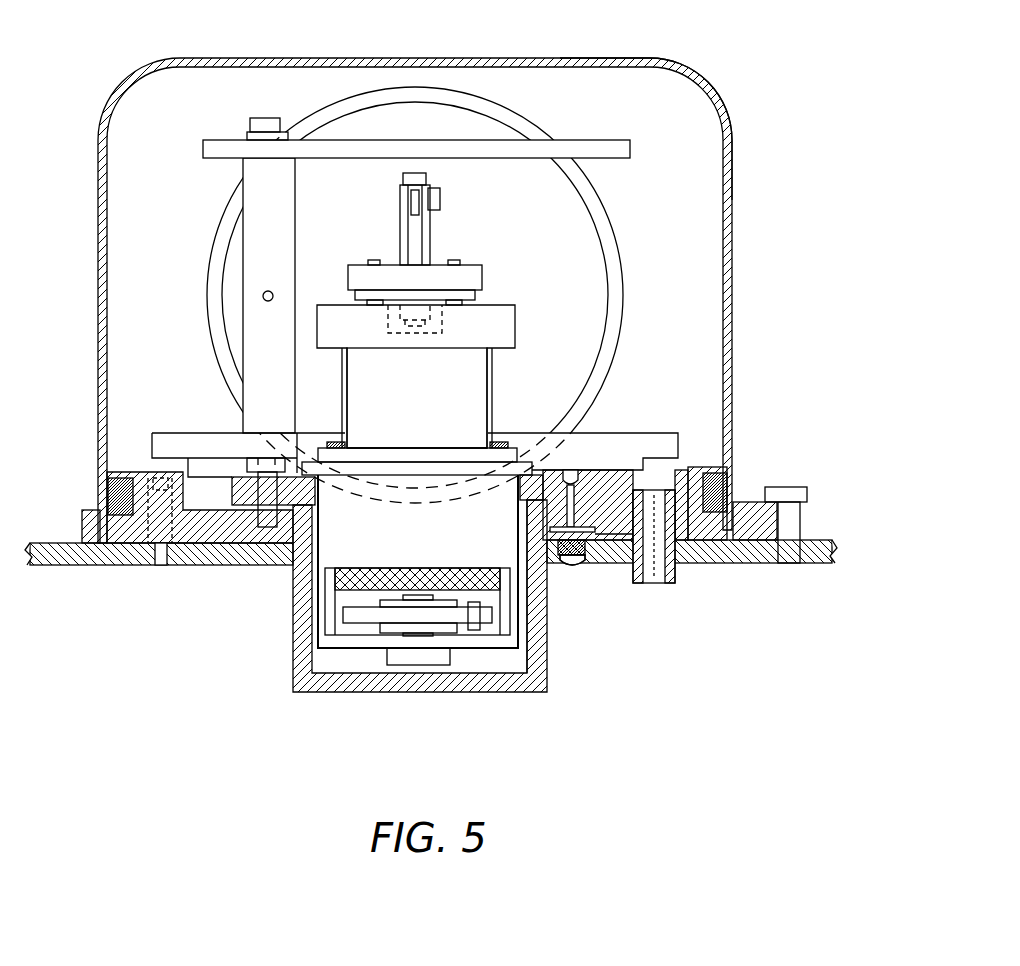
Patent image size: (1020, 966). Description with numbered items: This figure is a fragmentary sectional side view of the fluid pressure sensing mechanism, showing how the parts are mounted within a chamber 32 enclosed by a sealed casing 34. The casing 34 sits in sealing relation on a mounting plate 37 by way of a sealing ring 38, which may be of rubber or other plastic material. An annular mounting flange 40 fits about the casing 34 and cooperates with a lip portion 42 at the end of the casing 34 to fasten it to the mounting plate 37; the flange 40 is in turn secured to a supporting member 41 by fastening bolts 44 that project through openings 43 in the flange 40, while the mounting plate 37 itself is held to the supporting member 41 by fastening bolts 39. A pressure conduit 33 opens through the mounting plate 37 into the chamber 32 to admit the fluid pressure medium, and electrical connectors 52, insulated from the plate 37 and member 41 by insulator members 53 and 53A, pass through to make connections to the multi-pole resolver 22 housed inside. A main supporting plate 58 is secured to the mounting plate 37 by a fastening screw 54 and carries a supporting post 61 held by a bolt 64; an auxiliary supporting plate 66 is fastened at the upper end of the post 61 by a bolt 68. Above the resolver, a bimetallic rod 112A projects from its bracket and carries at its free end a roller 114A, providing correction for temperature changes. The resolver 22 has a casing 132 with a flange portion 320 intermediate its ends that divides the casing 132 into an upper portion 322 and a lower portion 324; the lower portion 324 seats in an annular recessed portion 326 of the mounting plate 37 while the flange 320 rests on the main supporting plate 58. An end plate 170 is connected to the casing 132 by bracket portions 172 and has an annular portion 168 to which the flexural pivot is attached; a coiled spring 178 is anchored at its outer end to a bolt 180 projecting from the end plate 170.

The multi-pole resolver 22 is at (440, 538).
The chamber 32 is at (702, 224).
The pressure conduit 33 is at (676, 580).
The sealed casing 34 is at (652, 58).
The mounting plate 37 is at (206, 545).
The sealing ring 38 is at (729, 482).
The fastening bolts 39 is at (161, 565).
The annular mounting flange 40 is at (93, 524).
The supporting member 41 is at (131, 565).
The lip portion 42 is at (96, 542).
The openings 43 is at (803, 560).
The fastening bolts 44 is at (791, 487).
The electrical connectors 52 is at (578, 495).
The insulator member 53 is at (579, 520).
The insulator member 53A is at (562, 557).
The fastening screw 54 is at (262, 505).
The main supporting plate 58 is at (298, 503).
The supporting post 61 is at (253, 233).
The bolt 64 is at (261, 458).
The auxiliary supporting plate 66 is at (601, 140).
The bolt 68 is at (258, 118).
The bimetallic rod 112A is at (421, 249).
The roller 114A is at (443, 327).
The casing 132 is at (438, 428).
The annular portion 168 is at (398, 661).
The end plate 170 is at (497, 640).
The bracket portions 172 is at (320, 604).
The spring 178 is at (356, 618).
The bolt 180 is at (475, 626).
The flange portion 320 is at (547, 470).
The casing portion 322 is at (511, 384).
The casing portion 324 is at (502, 550).
The annular recessed portion 326 is at (547, 676).